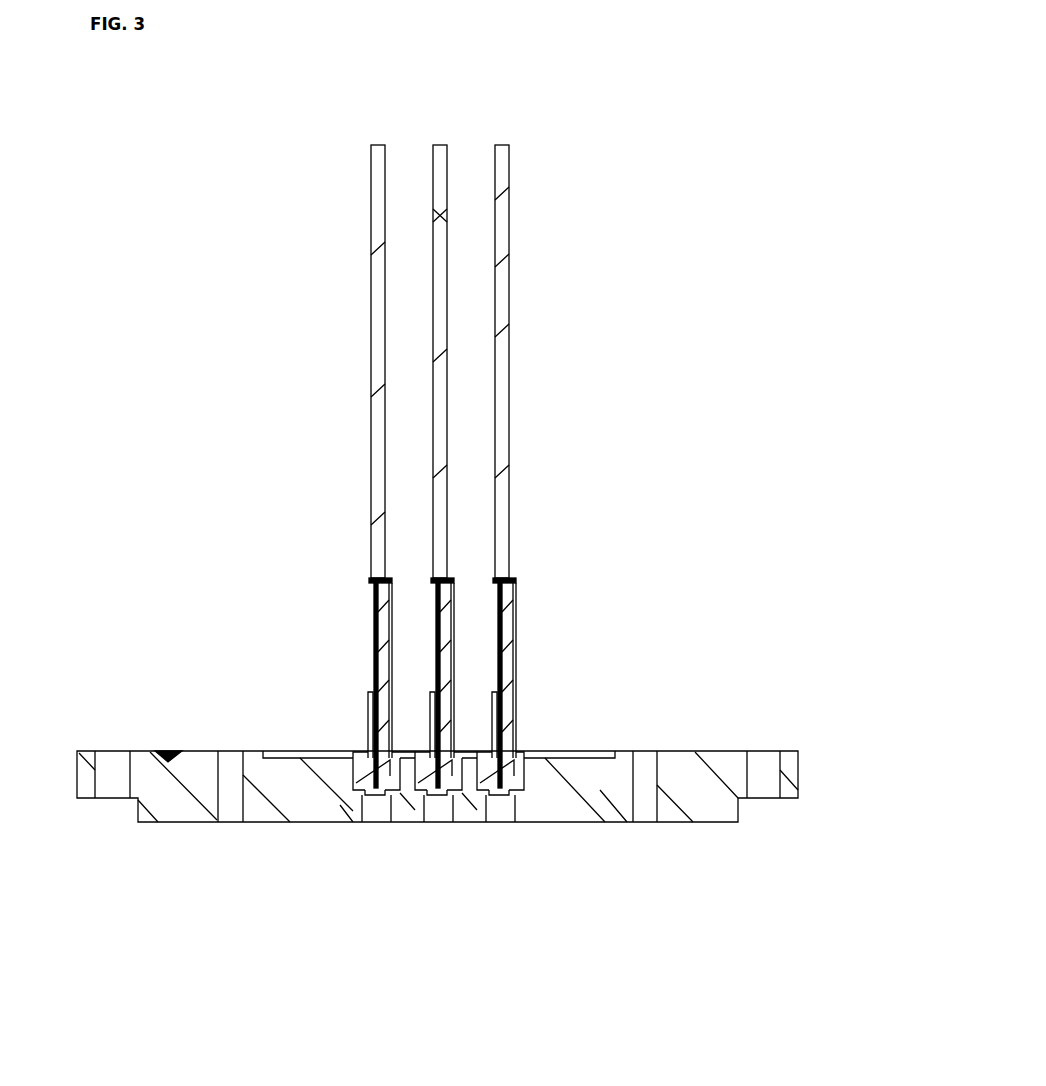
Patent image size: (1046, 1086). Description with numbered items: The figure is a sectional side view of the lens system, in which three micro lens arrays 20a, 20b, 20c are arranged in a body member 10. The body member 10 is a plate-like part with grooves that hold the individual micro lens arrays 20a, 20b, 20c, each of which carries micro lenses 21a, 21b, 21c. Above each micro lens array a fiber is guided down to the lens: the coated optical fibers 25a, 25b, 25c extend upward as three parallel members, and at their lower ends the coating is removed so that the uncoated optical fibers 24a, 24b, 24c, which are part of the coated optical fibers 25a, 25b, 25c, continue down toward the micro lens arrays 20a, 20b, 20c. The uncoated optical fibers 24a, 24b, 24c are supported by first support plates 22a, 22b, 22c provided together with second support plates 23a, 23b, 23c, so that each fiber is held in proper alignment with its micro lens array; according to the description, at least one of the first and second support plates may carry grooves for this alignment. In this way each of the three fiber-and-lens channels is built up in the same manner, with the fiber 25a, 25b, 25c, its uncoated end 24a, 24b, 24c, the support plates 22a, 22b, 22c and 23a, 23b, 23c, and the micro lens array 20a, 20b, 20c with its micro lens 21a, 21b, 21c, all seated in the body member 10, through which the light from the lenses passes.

The body member 10 is at (704, 750).
The micro lens array 20a is at (356, 768).
The micro lens array 20b is at (418, 763).
The micro lens array 20c is at (477, 763).
The micro lens 21a is at (381, 796).
The socket bottom projection 21b is at (437, 796).
The socket bottom projection 21c is at (506, 796).
The first support plate 22a is at (388, 762).
The first support plate 22b is at (444, 762).
The first support plate 22c is at (505, 762).
The second support plate 23a is at (366, 752).
The second support plate 23b is at (428, 710).
The second support plate 23c is at (492, 710).
The uncoated optical fiber 24a is at (379, 678).
The uncoated optical fiber 24b is at (437, 650).
The uncoated optical fiber 24c is at (498, 612).
The coated optical fiber 25a is at (388, 232).
The coated optical fiber 25b is at (450, 283).
The coated optical fiber 25c is at (508, 345).